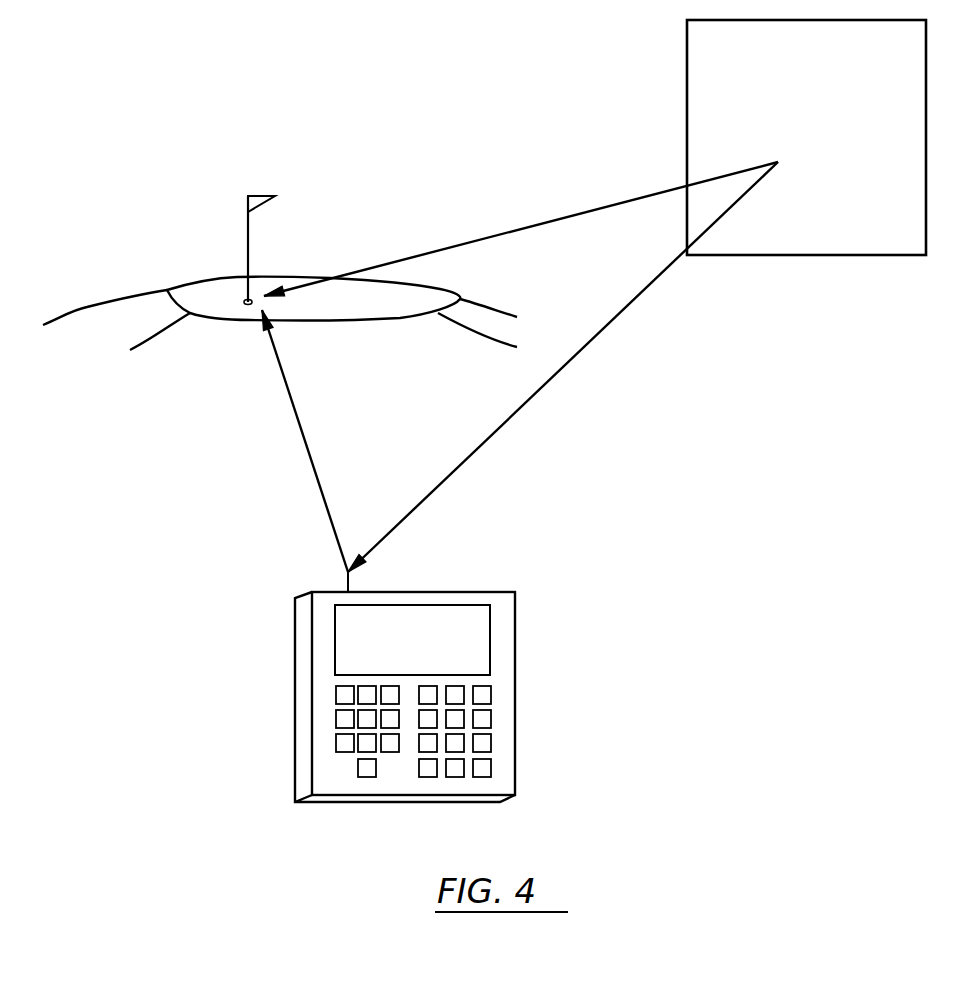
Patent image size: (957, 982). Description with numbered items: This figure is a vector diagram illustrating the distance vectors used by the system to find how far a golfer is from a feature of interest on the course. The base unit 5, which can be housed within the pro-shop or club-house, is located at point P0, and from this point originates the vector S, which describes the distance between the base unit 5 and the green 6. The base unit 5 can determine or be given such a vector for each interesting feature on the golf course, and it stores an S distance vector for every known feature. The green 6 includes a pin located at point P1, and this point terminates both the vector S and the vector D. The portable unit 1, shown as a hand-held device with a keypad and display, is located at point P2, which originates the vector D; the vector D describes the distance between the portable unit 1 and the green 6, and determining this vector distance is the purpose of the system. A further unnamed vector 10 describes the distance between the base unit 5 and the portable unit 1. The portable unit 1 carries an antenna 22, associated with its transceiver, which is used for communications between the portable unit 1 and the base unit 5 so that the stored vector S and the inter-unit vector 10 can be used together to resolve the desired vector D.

The portable unit 1 is at (515, 703).
The base unit 5 is at (880, 76).
The green 6 is at (162, 280).
The unnamed vector 10 is at (570, 361).
The antenna 22 is at (350, 588).
The point p0 P0 is at (778, 158).
The point p1 P1 is at (247, 305).
The point p2 P2 is at (347, 573).
The vector S is at (484, 236).
The vector D is at (304, 443).